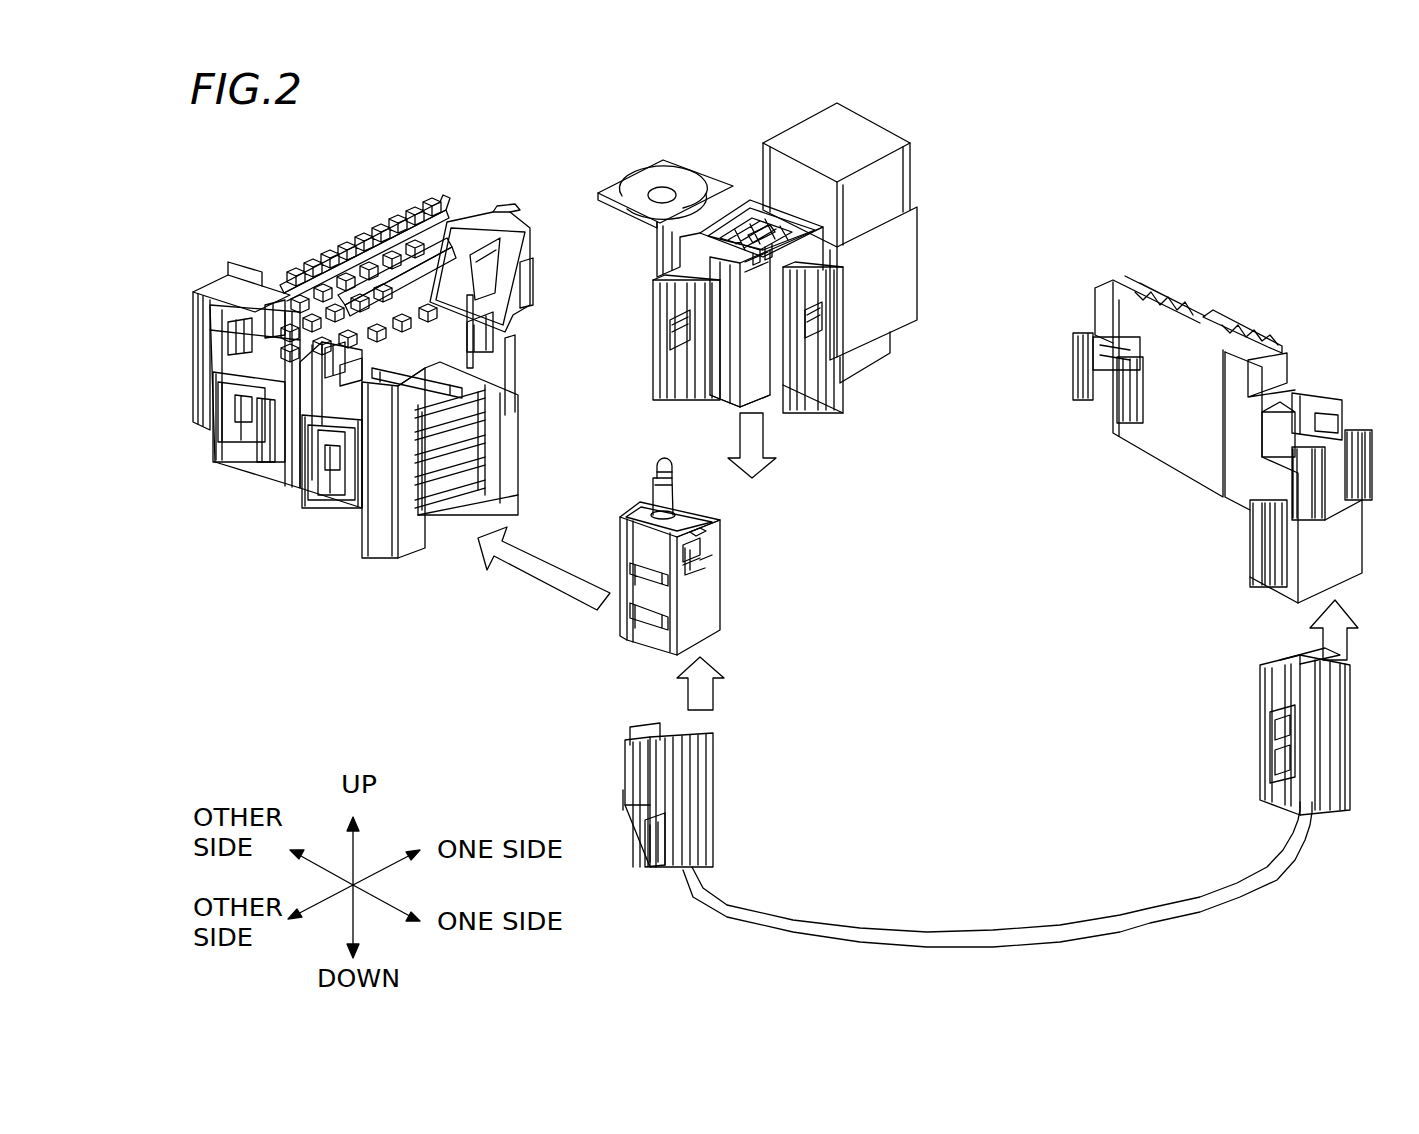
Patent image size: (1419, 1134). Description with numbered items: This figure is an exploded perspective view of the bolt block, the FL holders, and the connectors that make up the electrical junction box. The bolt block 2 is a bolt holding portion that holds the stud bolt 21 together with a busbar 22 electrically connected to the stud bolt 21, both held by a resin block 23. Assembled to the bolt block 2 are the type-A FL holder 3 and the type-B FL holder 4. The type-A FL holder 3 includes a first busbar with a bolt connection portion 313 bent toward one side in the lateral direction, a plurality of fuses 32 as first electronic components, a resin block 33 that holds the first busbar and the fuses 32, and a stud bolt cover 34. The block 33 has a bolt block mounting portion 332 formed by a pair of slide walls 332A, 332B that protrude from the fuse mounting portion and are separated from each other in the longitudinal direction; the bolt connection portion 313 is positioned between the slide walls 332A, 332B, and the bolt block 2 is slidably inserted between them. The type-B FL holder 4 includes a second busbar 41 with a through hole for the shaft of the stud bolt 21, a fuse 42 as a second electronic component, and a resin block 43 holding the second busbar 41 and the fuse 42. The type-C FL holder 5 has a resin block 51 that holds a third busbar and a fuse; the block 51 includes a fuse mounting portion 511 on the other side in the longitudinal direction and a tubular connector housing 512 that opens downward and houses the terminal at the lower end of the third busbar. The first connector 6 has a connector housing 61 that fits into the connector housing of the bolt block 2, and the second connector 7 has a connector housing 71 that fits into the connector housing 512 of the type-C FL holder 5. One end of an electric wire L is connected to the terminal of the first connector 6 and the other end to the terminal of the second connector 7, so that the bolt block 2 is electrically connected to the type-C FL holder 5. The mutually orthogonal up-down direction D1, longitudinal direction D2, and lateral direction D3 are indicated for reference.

The bolt block 2 is at (724, 586).
The stud bolt 21 is at (668, 495).
The busbar 22 is at (683, 535).
The block 23 is at (703, 613).
The type-A FL holder 3 is at (207, 276).
The fuses 32 is at (352, 335).
The block 33 is at (262, 470).
The stud bolt cover 34 is at (497, 310).
The bolt connection portion 313 is at (448, 383).
The bolt block mounting portion 332 is at (440, 735).
The slide wall 332A is at (500, 447).
The slide wall 332B is at (377, 518).
The type-B FL holder 4 is at (920, 235).
The second busbar 41 is at (640, 192).
The fuse 42 is at (757, 252).
The block 43 is at (895, 268).
The type-C FL holder 5 is at (1163, 291).
The block 51 is at (1078, 485).
The fuse mounting portion 511 is at (1180, 432).
The connector housing 512 is at (1253, 552).
The first connector 6 is at (715, 774).
The connector housing 61 is at (690, 810).
The second connector 7 is at (1258, 698).
The connector housing 71 is at (1278, 737).
The electric wire L is at (1040, 927).
The up-down direction D1 is at (363, 860).
The longitudinal direction D2 is at (378, 876).
The lateral direction D3 is at (332, 870).